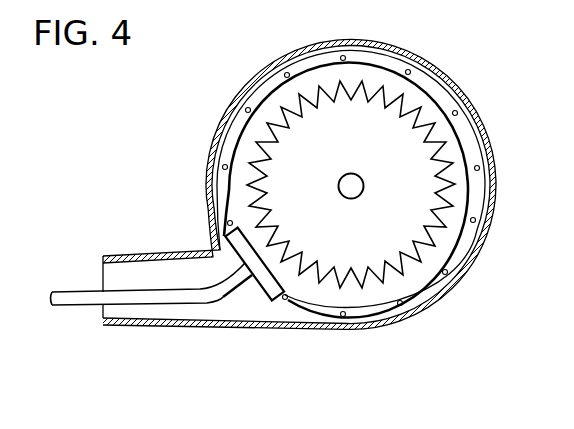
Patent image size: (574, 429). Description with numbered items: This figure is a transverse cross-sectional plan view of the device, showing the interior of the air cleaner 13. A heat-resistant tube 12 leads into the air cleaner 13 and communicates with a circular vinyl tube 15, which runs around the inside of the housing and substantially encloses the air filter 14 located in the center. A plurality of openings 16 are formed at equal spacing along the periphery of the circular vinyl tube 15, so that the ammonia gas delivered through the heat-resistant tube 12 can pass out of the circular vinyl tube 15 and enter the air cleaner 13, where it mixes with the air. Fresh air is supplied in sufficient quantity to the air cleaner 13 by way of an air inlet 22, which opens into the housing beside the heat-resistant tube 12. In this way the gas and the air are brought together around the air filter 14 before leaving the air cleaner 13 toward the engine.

The heat-resistant tube 12 is at (95, 300).
The air cleaner 13 is at (432, 70).
The air filter 14 is at (432, 167).
The circular vinyl tube 15 is at (473, 154).
The openings 16 is at (480, 213).
The air inlet 22 is at (120, 280).